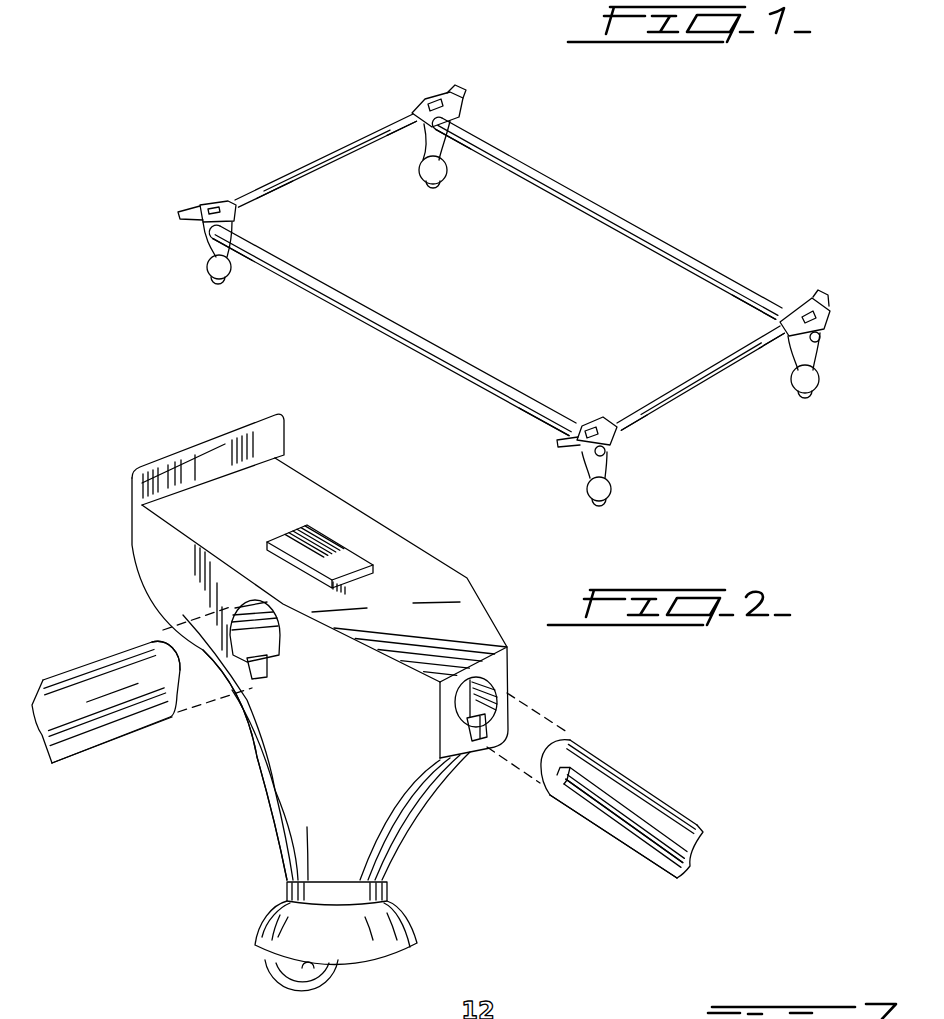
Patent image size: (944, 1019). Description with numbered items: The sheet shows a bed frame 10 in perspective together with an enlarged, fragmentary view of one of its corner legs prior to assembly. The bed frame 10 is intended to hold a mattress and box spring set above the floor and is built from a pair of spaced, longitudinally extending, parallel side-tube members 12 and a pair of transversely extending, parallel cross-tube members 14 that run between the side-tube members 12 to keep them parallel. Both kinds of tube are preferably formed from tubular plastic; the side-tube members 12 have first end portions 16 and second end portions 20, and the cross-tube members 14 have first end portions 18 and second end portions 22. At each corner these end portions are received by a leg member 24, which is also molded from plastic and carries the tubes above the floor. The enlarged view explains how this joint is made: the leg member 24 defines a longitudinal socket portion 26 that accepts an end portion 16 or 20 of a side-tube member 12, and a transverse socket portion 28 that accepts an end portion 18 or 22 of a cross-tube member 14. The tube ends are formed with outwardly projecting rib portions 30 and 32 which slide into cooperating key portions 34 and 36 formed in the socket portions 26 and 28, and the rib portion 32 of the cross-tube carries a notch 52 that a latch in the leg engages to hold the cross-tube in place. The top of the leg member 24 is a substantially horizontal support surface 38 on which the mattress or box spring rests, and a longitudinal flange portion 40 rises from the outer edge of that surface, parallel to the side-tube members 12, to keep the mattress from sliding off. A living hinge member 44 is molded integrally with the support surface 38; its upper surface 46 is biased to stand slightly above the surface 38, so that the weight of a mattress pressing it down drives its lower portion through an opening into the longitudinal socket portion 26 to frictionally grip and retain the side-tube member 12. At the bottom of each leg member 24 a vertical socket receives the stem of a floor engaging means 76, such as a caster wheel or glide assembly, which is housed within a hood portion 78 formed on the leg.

In FIG. 1, the bed frame 10 is at (624, 220).
In FIG. 1, the side-tube member 12 is at (567, 185).
In FIG. 2, the side-tube member 12 is at (66, 668).
In FIG. 1, the cross-tube member 14 is at (320, 155).
In FIG. 2, the cross-tube member 14 is at (705, 822).
In FIG. 1, the first end portion 16 is at (455, 124).
In FIG. 2, the first end portion 16 is at (138, 665).
In FIG. 1, the first end portion 18 is at (265, 190).
In FIG. 2, the first end portion 18 is at (597, 780).
In FIG. 1, the second end portion 20 is at (765, 302).
In FIG. 1, the second end portion 22 is at (400, 130).
In FIG. 1, the leg member 24 is at (460, 86).
In FIG. 2, the leg member 24 is at (262, 778).
In FIG. 2, the longitudinal socket portion 26 is at (265, 632).
In FIG. 2, the transverse socket portion 28 is at (480, 700).
In FIG. 2, the rib portion 30 is at (133, 725).
In FIG. 2, the rib portion 32 is at (643, 856).
In FIG. 2, the key portion 34 is at (258, 674).
In FIG. 2, the key portion 36 is at (478, 742).
In FIG. 1, the support surface 38 is at (430, 95).
In FIG. 2, the support surface 38 is at (420, 586).
In FIG. 1, the longitudinal flange portion 40 is at (466, 92).
In FIG. 2, the longitudinal flange portion 40 is at (276, 458).
In FIG. 2, the living hinge member 44 is at (332, 540).
In FIG. 2, the upper surface 46 is at (345, 562).
In FIG. 2, the notch 52 is at (605, 826).
In FIG. 1, the floor engaging means 76 is at (210, 284).
In FIG. 2, the floor engaging means 76 is at (292, 983).
In FIG. 1, the hood portion 78 is at (442, 168).
In FIG. 2, the hood portion 78 is at (393, 930).